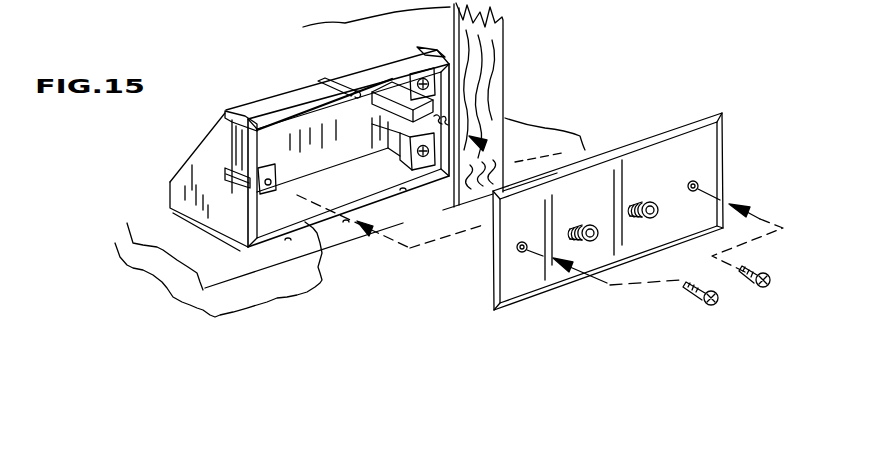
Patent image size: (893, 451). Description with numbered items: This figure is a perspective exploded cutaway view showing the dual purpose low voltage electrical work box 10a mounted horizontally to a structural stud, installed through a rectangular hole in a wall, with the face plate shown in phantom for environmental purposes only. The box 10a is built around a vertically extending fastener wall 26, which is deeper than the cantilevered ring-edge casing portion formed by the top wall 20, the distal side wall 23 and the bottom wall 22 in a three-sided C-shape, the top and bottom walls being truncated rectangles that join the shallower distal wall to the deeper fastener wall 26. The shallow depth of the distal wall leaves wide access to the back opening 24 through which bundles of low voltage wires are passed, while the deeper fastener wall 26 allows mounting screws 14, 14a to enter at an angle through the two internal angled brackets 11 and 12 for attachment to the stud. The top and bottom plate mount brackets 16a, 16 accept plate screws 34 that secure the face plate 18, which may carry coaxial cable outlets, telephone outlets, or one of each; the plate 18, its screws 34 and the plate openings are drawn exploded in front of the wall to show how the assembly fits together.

The low voltage electrical work box 10a is at (352, 184).
The internal angled bracket 11 is at (407, 83).
The internal angled bracket 12 is at (403, 152).
The mounting screw 14 is at (226, 173).
The flange tab 14a is at (258, 160).
The bottom plate mount bracket 16 is at (441, 104).
The bracket bar 16a is at (356, 90).
The cover plate 18 is at (647, 138).
The box top wall 20 is at (310, 84).
The floor 22 is at (324, 277).
The box top edge 23 is at (278, 76).
The wall opening 24 is at (453, 160).
The fastener wall 26 is at (185, 190).
The wall 34 is at (493, 45).